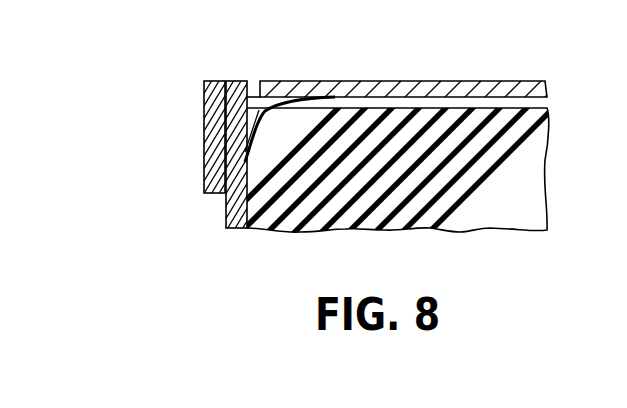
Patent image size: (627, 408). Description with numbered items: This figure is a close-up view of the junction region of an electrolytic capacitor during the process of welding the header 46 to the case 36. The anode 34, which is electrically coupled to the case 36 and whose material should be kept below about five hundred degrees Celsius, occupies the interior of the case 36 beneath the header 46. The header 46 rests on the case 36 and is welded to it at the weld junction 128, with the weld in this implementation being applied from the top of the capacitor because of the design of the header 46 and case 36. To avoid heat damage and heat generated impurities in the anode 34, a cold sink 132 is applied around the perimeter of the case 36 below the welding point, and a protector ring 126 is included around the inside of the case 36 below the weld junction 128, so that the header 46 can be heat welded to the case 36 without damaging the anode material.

The anode 34 is at (440, 120).
The header 46 is at (312, 86).
The case 36 is at (230, 208).
The cold sink 132 is at (212, 125).
The protector ring 126 is at (220, 138).
The weld junction 128 is at (253, 80).